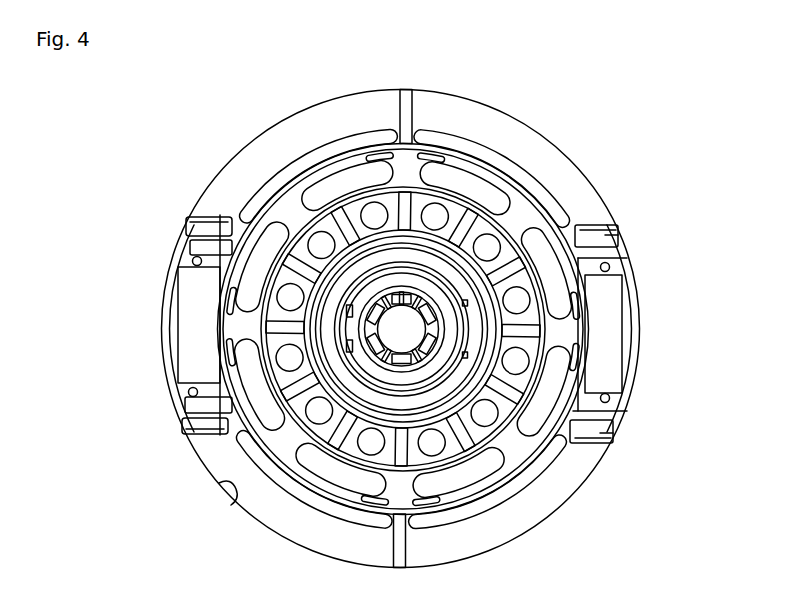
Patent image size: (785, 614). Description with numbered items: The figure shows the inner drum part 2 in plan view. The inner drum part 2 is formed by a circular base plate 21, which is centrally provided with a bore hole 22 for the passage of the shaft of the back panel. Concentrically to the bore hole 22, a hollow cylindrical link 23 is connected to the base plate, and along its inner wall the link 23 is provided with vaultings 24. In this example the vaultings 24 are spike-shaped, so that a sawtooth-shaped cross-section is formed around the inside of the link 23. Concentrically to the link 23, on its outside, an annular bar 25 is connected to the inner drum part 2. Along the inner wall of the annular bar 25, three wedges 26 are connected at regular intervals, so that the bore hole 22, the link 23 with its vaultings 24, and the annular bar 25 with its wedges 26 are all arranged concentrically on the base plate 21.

The inner drum part 2 is at (266, 100).
The circular base plate 21 is at (557, 170).
The bore hole 22 is at (408, 334).
The hollow cylindrical link 23 is at (427, 423).
The vaultings 24 is at (500, 396).
The annular bar 25 is at (443, 507).
The wedges 26 is at (345, 493).